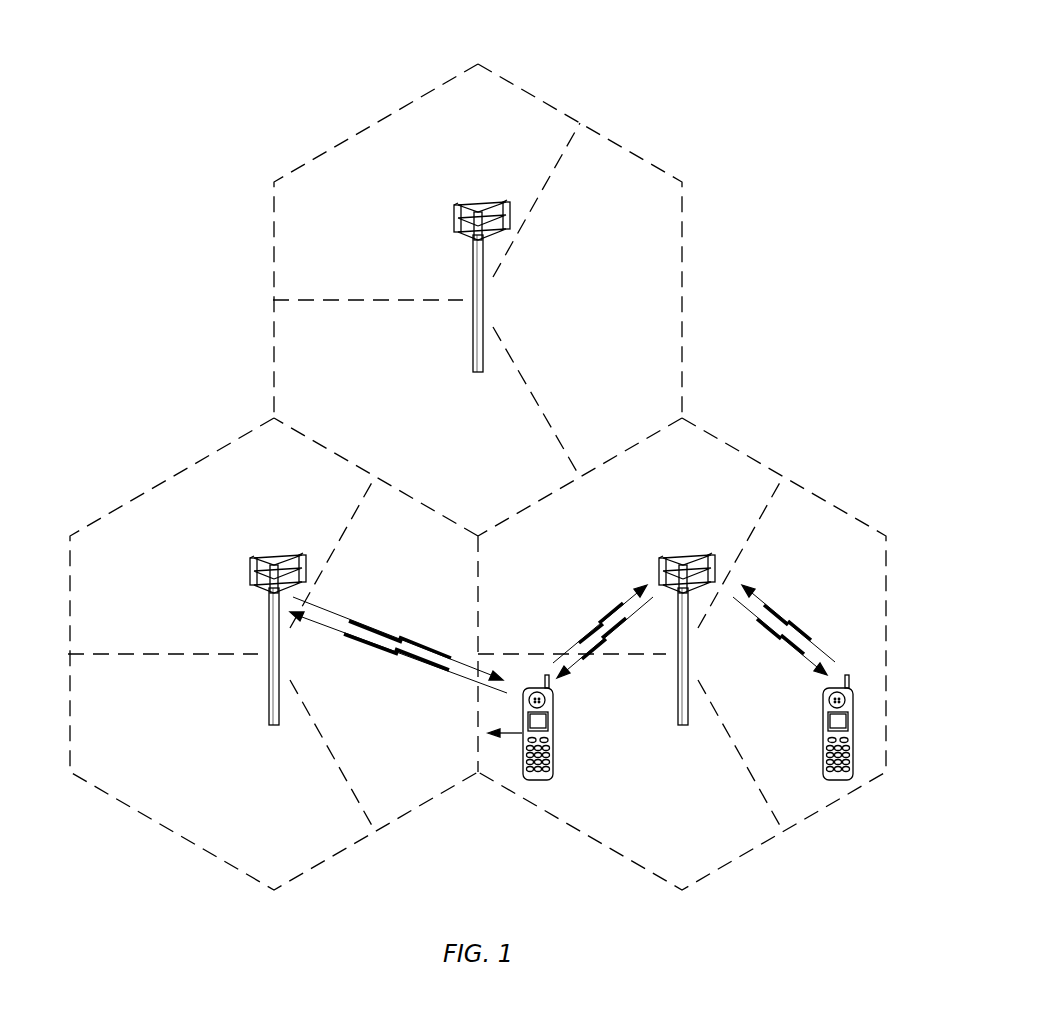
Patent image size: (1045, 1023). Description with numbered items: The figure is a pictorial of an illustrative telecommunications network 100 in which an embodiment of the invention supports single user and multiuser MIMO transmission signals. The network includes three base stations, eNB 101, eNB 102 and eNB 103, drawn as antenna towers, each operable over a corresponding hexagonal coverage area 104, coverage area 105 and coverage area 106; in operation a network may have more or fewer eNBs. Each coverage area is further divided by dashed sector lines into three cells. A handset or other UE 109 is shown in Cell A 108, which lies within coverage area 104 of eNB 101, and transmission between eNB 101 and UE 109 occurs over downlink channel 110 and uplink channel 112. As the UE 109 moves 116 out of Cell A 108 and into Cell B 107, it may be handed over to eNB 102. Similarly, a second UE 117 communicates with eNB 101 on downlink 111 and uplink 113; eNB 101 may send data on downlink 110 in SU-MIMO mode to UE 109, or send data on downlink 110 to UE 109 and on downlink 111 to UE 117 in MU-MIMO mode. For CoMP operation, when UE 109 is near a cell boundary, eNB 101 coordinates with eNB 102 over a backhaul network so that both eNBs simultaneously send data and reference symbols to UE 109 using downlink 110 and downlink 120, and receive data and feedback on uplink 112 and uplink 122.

The telecommunications network 100 is at (670, 73).
The eNB 101 is at (692, 557).
The eNB 102 is at (268, 685).
The eNB 103 is at (472, 330).
The coverage area 104 is at (823, 810).
The coverage area 105 is at (172, 832).
The coverage area 106 is at (683, 300).
The Cell B 107 is at (430, 771).
The Cell A 108 is at (690, 842).
The UE 109 is at (555, 747).
The downlink channel 110 is at (612, 647).
The downlink 111 is at (787, 657).
The uplink channel 112 is at (615, 607).
The uplink 113 is at (773, 603).
The movement 116 is at (507, 735).
The UE 117 is at (818, 727).
The downlink 120 is at (348, 637).
The uplink 122 is at (377, 625).